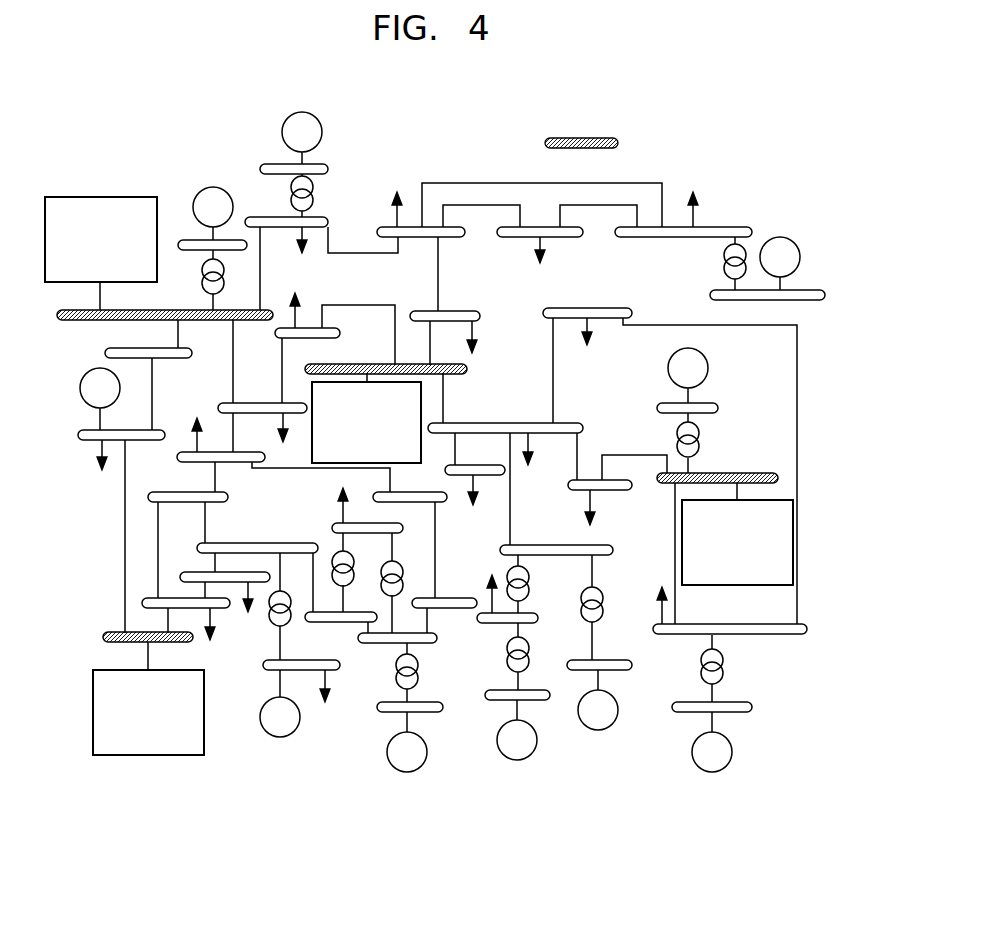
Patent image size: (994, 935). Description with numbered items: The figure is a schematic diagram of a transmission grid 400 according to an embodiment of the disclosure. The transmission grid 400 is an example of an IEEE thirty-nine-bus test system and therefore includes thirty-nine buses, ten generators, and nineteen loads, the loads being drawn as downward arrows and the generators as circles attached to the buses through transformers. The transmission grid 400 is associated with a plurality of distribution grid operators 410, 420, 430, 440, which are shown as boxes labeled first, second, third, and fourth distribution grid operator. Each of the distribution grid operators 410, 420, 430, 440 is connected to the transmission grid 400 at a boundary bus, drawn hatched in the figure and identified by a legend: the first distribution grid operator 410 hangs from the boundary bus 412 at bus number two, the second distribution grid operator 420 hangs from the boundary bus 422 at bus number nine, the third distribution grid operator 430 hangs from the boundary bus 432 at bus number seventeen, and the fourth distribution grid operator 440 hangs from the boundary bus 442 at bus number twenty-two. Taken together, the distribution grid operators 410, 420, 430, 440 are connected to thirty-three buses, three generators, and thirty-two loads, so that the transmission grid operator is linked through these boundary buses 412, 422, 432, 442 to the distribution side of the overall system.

The transmission grid 400 is at (453, 837).
The distribution grid operator 410 is at (115, 197).
The boundary bus #2 of first distribution grid operator 412 is at (118, 309).
The distribution grid operator 420 is at (160, 756).
The boundary bus #9 of second distribution grid operator 422 is at (120, 643).
The distribution grid operator 430 is at (311, 449).
The boundary bus #17 of third distribution grid operator 432 is at (456, 374).
The distribution grid operator 440 is at (717, 585).
The boundary bus #22 of fourth distribution grid operator 442 is at (743, 472).